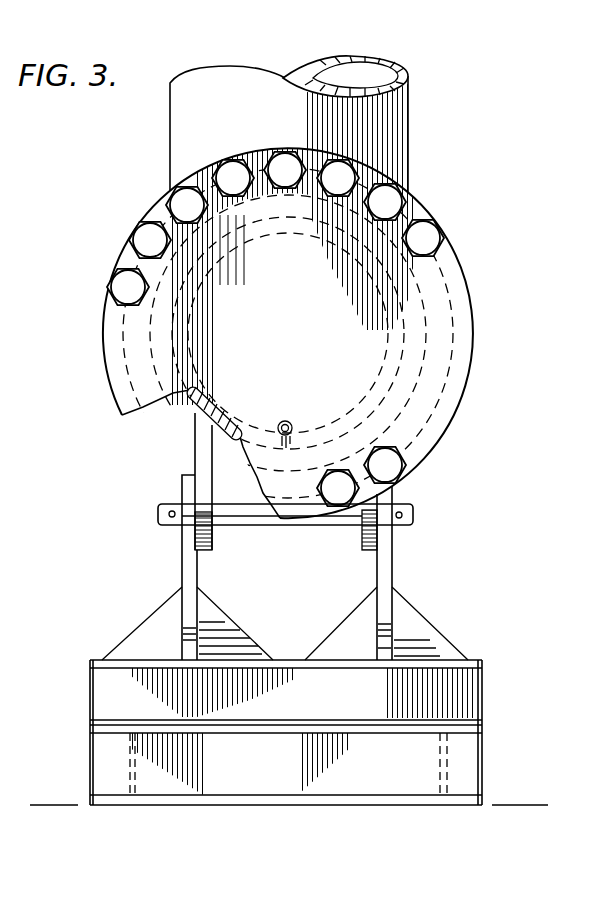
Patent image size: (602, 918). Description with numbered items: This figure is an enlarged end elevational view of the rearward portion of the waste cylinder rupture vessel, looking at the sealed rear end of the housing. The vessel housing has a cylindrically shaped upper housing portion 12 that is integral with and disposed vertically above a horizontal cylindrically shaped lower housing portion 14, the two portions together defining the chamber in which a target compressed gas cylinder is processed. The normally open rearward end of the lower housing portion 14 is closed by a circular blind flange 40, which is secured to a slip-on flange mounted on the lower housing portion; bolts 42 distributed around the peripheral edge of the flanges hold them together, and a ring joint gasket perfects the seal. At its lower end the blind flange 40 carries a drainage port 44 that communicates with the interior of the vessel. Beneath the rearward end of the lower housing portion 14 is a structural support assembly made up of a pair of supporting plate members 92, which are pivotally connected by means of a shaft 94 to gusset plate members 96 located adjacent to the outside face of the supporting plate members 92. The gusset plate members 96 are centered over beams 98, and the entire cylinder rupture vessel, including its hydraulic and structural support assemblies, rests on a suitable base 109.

The upper housing portion 12 is at (403, 136).
The lower housing portion 14 is at (395, 327).
The blind flange 40 is at (465, 275).
The bolts 42 is at (430, 233).
The drainage port 44 is at (289, 421).
The supporting plate members 92 is at (200, 445).
The shaft 94 is at (414, 509).
The gusset plate members 96 is at (187, 562).
The beams 98 is at (473, 696).
The base 109 is at (473, 765).